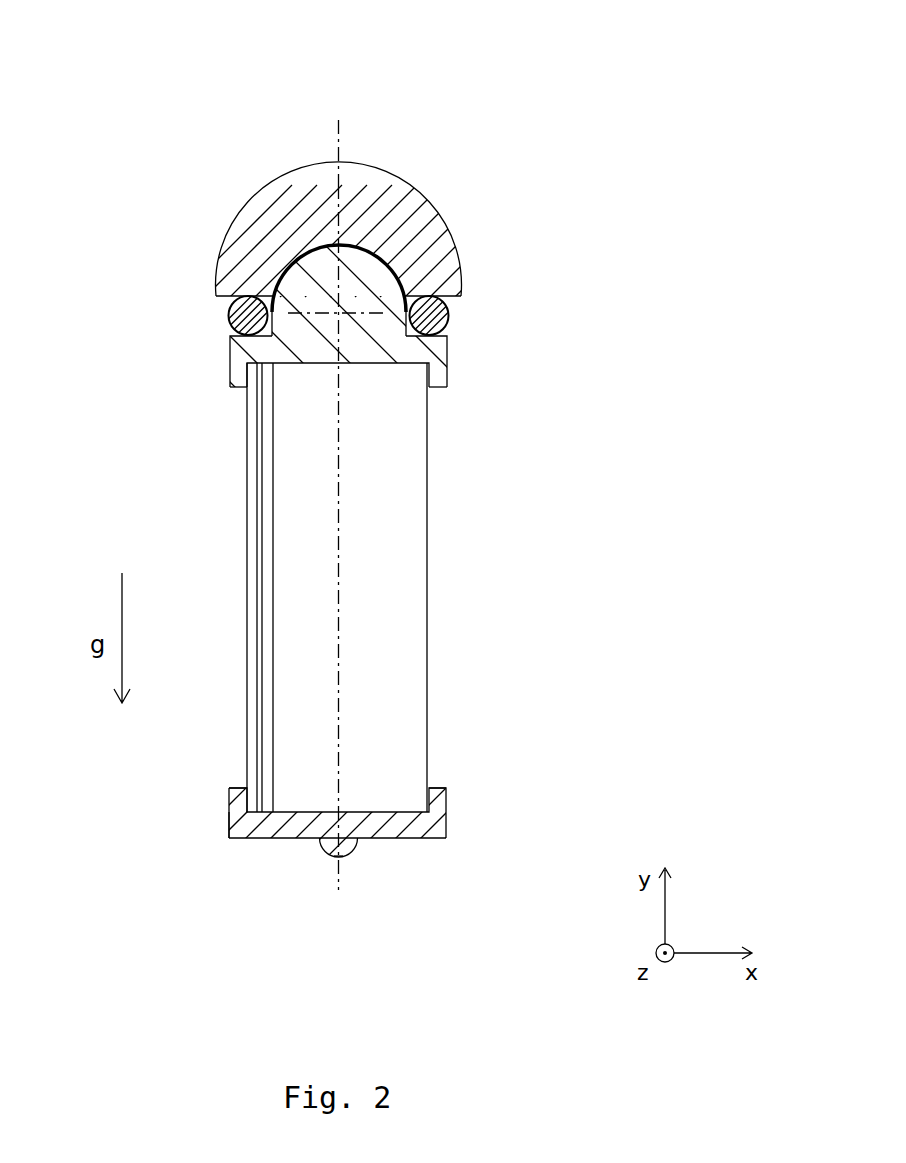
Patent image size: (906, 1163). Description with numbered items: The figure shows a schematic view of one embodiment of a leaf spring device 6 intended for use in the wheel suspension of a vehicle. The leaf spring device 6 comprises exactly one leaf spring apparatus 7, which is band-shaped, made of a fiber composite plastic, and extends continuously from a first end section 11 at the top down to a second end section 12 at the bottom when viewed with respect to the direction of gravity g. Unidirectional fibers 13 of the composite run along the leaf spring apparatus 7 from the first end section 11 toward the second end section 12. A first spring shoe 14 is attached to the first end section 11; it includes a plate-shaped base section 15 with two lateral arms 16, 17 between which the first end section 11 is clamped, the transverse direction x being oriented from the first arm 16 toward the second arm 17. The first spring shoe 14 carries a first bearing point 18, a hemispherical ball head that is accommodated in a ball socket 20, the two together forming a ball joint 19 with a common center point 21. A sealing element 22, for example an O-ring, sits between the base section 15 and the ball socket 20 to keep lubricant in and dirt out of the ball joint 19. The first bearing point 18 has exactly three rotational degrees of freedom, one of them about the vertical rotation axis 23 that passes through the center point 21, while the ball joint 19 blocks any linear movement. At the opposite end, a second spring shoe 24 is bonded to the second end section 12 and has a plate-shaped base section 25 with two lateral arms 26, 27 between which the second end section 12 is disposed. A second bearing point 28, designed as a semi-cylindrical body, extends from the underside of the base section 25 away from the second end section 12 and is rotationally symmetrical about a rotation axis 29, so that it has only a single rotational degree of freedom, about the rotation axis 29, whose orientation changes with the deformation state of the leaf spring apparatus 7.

The leaf spring device 6 is at (329, 91).
The leaf spring apparatus 7 is at (427, 664).
The first end section 11 is at (390, 270).
The second end section 12 is at (422, 840).
The fibers 13 is at (257, 560).
The first spring shoe 14 is at (447, 347).
The base section 15 is at (230, 338).
The first arm 16 is at (230, 381).
The second arm 17 is at (447, 369).
The first bearing point 18 is at (274, 287).
The ball joint 19 is at (367, 177).
The ball socket 20 is at (272, 277).
The center point 21 is at (340, 305).
The sealing element 22 is at (449, 313).
The rotation axis 23 is at (338, 567).
The second spring shoe 24 is at (242, 839).
The base section 25 is at (228, 822).
The lateral arm 26 is at (228, 792).
The lateral arm 27 is at (447, 792).
The second bearing point 28 is at (323, 856).
The rotation axis 29 is at (344, 855).